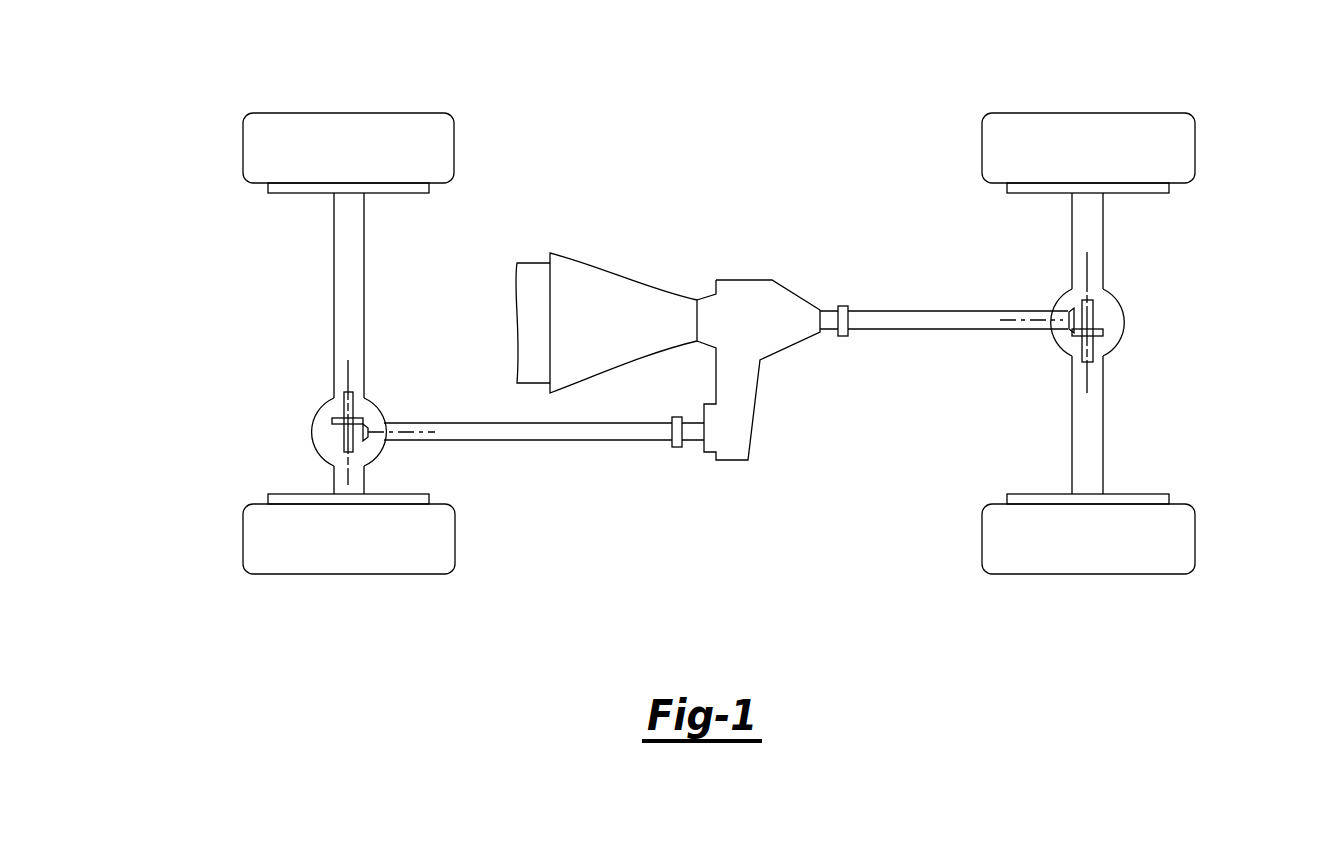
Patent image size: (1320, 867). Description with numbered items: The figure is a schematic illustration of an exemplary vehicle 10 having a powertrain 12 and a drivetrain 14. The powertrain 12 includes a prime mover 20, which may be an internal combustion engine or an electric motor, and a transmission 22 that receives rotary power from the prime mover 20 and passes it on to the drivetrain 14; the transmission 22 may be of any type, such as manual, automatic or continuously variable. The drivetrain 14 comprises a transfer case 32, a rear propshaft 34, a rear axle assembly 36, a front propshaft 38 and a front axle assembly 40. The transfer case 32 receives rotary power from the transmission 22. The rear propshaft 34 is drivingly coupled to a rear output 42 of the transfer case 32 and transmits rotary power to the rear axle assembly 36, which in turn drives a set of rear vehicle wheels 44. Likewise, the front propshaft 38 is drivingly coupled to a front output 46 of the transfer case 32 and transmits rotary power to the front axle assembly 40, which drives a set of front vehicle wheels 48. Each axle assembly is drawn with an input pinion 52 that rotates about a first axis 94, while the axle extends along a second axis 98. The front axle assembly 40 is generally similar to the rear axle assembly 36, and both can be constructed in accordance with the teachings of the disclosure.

The vehicle 10 is at (618, 114).
The powertrain 12 is at (608, 266).
The drivetrain 14 is at (805, 374).
The prime mover 20 is at (524, 313).
The transmission 22 is at (600, 347).
The transfer case 32 is at (758, 292).
The rear propshaft 34 is at (932, 311).
The rear axle assembly 36 is at (1105, 264).
The front propshaft 38 is at (462, 422).
The front axle assembly 40 is at (328, 291).
The rear output 42 is at (828, 318).
The rear vehicle wheels 44 is at (1195, 148).
The front output 46 is at (692, 437).
The front vehicle wheels 48 is at (243, 148).
The input pinion 52 is at (372, 430).
The first axis 94 is at (422, 430).
The second axis 98 is at (340, 478).